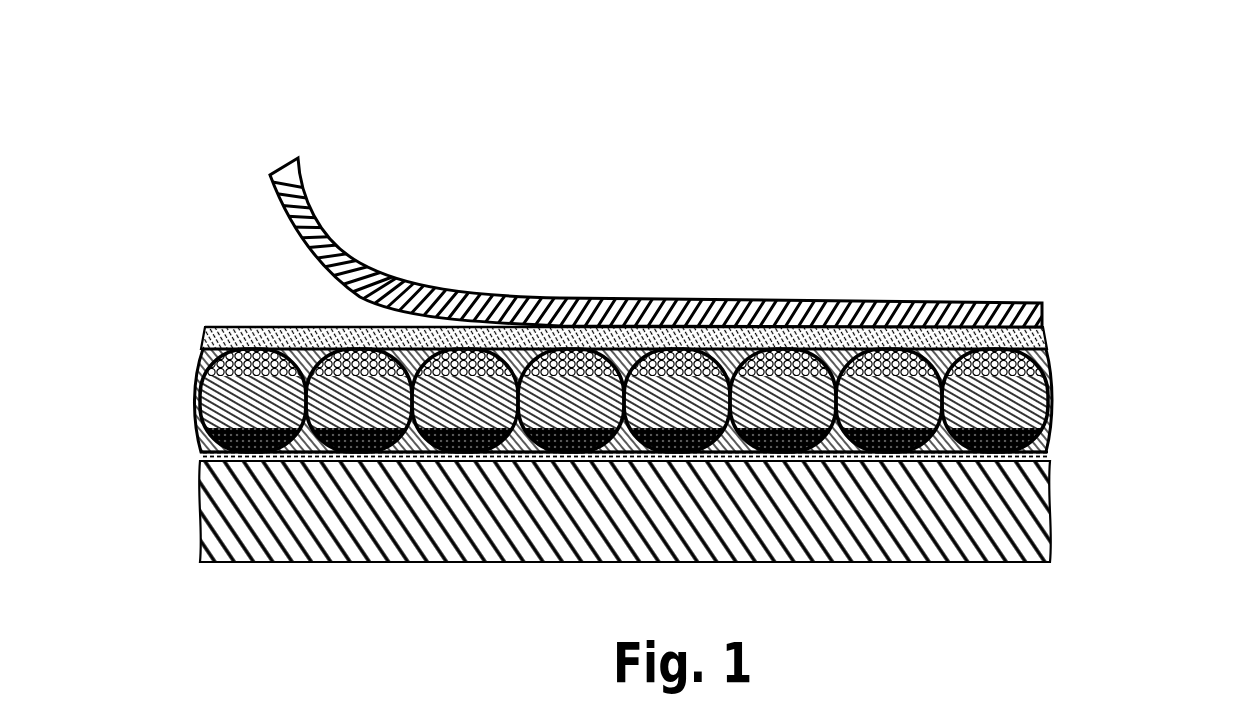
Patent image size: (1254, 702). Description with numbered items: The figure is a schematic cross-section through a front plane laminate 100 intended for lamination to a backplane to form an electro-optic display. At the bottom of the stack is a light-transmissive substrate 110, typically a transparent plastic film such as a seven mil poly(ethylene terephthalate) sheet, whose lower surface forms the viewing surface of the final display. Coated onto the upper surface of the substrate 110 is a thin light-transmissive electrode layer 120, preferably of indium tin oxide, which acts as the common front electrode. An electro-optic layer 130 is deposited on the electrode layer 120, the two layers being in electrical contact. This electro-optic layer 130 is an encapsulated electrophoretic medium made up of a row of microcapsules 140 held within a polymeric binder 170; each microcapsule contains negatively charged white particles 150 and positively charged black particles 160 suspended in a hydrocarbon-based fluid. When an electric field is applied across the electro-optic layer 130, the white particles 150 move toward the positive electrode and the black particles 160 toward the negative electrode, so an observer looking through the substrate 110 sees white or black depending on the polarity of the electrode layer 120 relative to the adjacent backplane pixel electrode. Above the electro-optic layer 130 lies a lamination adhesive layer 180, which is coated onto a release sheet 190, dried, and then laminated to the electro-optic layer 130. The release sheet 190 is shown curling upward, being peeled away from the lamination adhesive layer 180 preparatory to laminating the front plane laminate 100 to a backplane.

The front plane laminate 100 is at (421, 212).
The light-transmissive substrate 110 is at (1005, 518).
The light-transmissive electrode layer 120 is at (1052, 455).
The electro-optic layer 130 is at (625, 360).
The microcapsules 140 is at (210, 397).
The white particles 150 is at (197, 347).
The black particles 160 is at (203, 457).
The polymeric binder 170 is at (1047, 347).
The lamination adhesive layer 180 is at (293, 327).
The release sheet 190 is at (645, 303).